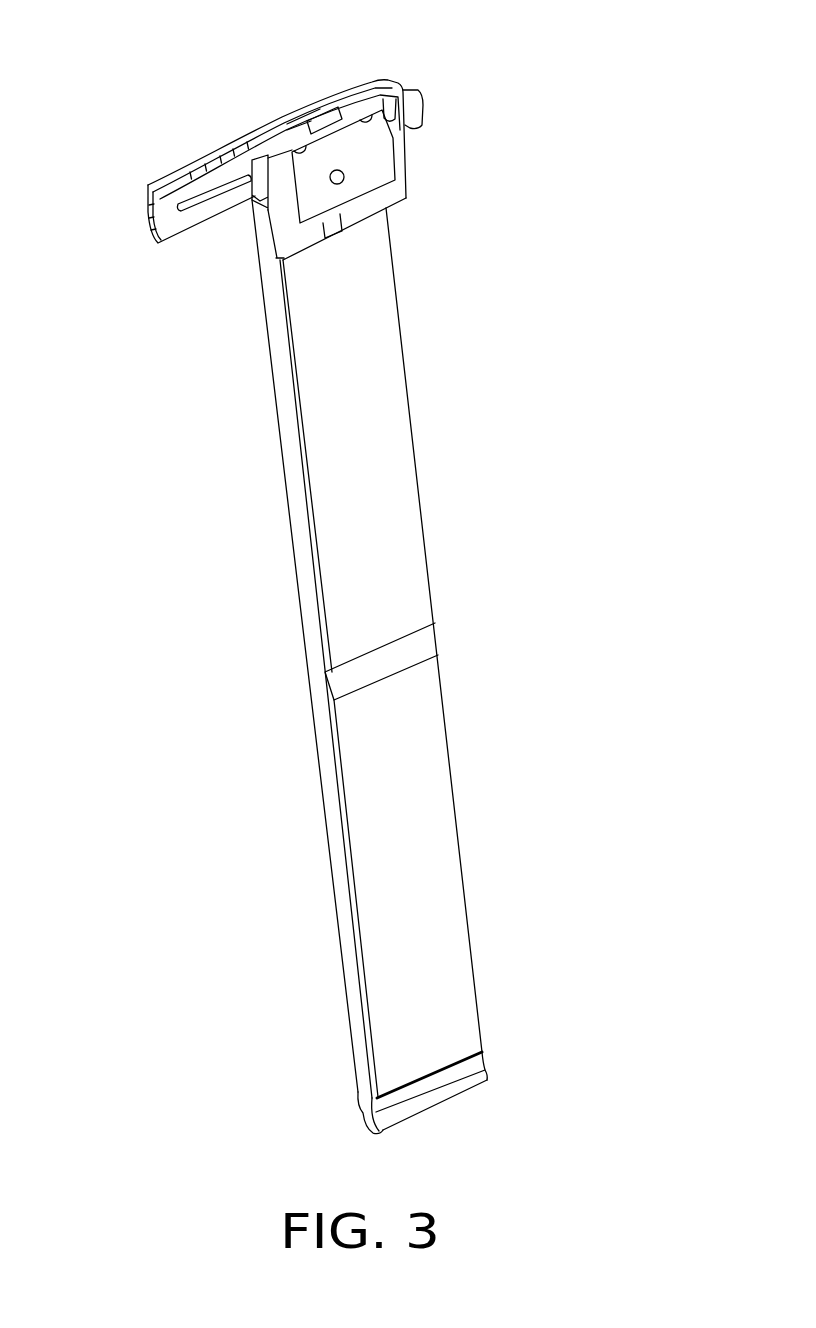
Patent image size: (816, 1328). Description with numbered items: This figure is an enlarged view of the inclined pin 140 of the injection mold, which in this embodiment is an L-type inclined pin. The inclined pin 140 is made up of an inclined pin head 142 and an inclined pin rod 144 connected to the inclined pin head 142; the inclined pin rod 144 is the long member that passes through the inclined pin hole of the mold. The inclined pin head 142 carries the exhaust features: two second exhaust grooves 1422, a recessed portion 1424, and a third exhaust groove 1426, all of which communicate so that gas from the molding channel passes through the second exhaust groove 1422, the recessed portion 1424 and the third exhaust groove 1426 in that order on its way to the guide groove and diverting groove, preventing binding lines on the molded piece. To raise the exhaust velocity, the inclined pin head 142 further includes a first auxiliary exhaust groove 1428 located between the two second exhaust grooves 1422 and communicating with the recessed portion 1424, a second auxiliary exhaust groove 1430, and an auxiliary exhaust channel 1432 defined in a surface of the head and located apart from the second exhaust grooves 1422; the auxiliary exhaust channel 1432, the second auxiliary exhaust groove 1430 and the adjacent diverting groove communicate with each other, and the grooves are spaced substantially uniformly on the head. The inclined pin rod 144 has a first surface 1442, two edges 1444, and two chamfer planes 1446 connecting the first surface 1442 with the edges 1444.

The inclined pin 140 is at (148, 63).
The inclined pin head 142 is at (404, 166).
The second exhaust groove 1422 is at (388, 108).
The recessed portion 1424 is at (370, 157).
The third exhaust groove 1426 is at (330, 228).
The first auxiliary exhaust groove 1428 is at (332, 135).
The second auxiliary exhaust groove 1430 is at (242, 166).
The auxiliary exhaust channel 1432 is at (195, 199).
The inclined pin rod 144 is at (172, 433).
The first surface 1442 is at (323, 520).
The edge 1444 is at (285, 416).
The chamfer plane 1446 is at (302, 472).